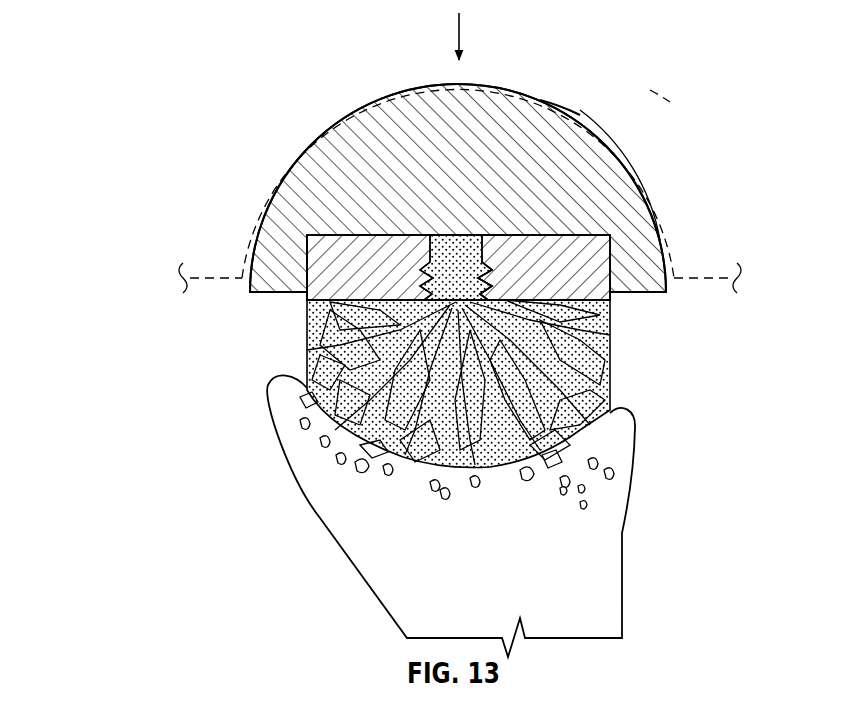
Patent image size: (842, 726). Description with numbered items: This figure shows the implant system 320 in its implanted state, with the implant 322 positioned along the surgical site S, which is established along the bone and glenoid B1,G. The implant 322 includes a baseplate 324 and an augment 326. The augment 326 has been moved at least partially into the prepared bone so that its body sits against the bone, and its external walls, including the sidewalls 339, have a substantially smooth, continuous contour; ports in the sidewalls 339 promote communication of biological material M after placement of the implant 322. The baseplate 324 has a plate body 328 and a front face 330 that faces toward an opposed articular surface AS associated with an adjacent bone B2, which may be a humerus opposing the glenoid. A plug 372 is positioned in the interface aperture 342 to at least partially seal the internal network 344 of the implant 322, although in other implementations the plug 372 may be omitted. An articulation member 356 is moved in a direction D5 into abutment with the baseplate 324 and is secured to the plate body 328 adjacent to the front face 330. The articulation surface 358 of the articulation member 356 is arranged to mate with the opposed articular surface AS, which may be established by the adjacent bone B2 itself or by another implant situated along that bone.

The drill bit cutting element assembly 320 is at (400, 263).
The implant 322 is at (299, 189).
The baseplate 324 is at (307, 268).
The augment 326 is at (307, 320).
The plate body 328 is at (597, 253).
The front face 330 is at (596, 245).
The sidewalls 339 is at (307, 348).
The interface aperture 342 is at (478, 244).
The internal network 344 is at (464, 404).
The articulation member 356 is at (345, 139).
The articulation surface 358 is at (395, 103).
The plug 372 is at (468, 238).
The biological material M is at (495, 303).
The opposed articular surface AS is at (662, 269).
The adjacent bone B2 is at (580, 112).
The surgical site S is at (674, 92).
The direction D5 is at (460, 42).
The bone / glenoid B1,G is at (600, 573).